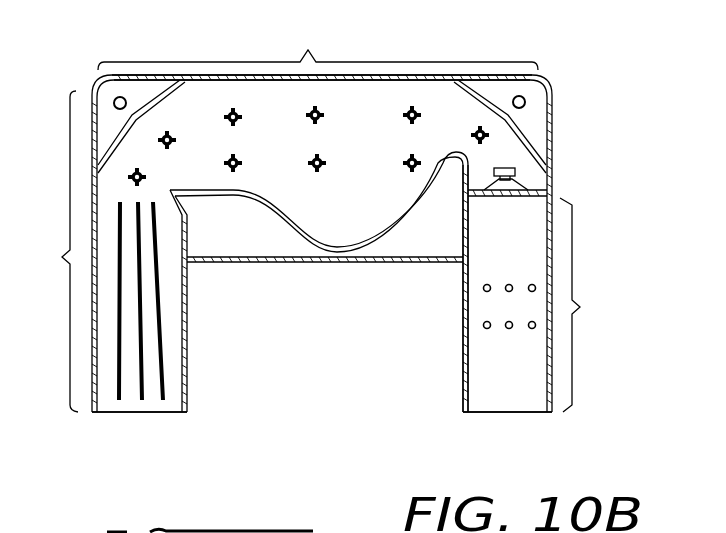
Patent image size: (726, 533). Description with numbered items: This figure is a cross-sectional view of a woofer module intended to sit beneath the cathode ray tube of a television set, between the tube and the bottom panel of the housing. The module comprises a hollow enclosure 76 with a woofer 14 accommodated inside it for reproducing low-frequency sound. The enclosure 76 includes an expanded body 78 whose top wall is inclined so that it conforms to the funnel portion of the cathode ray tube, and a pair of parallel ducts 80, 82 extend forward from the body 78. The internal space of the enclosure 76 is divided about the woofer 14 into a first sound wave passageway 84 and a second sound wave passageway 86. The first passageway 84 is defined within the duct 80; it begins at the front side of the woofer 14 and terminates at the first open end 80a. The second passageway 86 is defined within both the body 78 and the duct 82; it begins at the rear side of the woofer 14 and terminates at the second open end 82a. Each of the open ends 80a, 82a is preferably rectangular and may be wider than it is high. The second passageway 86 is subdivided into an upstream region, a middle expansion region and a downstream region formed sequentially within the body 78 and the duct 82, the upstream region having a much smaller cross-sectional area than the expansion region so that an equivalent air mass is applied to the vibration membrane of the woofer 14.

The hollow enclosure 76 is at (562, 141).
The expanded body 78 is at (365, 78).
The second sound wave passageway 86 is at (284, 210).
The duct 82 is at (188, 307).
The second open end 82a is at (158, 414).
The duct 80 is at (463, 313).
The first open end 80a is at (508, 414).
The first sound wave passageway 84 is at (591, 305).
The woofer 14 is at (530, 184).